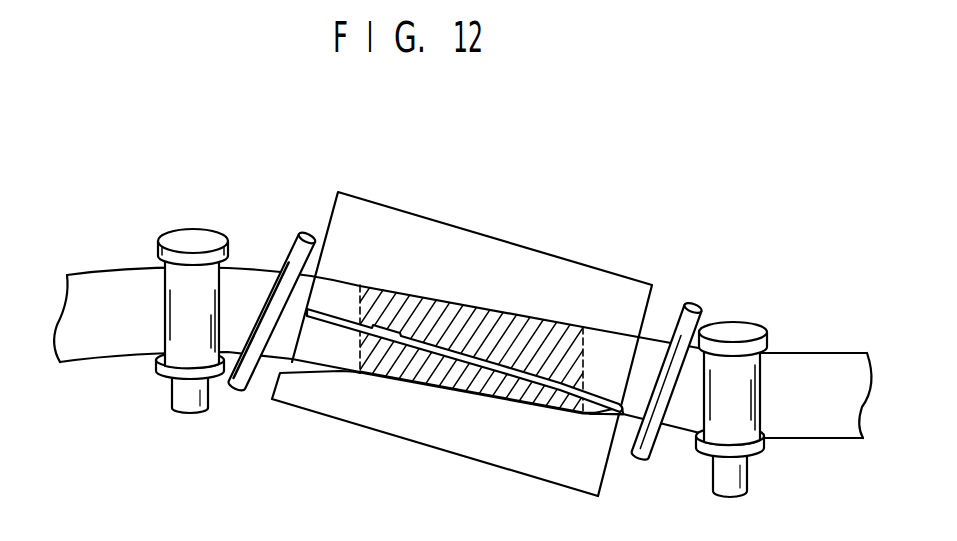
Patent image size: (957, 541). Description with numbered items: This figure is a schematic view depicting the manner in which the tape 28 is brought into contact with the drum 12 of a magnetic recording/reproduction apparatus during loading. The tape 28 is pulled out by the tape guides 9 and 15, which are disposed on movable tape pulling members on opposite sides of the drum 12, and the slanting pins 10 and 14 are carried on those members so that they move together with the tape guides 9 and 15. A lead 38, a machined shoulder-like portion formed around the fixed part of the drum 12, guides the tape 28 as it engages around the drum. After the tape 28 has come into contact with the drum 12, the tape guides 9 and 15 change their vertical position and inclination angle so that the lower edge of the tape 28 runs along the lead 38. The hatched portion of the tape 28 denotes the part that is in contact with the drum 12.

The tape guide 9 is at (185, 232).
The slanting pin 10 is at (290, 242).
The rotational cylindrical drum 12 is at (557, 254).
The slanting pin 14 is at (678, 306).
The tape guide 15 is at (724, 322).
The tape 28 is at (830, 352).
The lead 38 is at (413, 383).